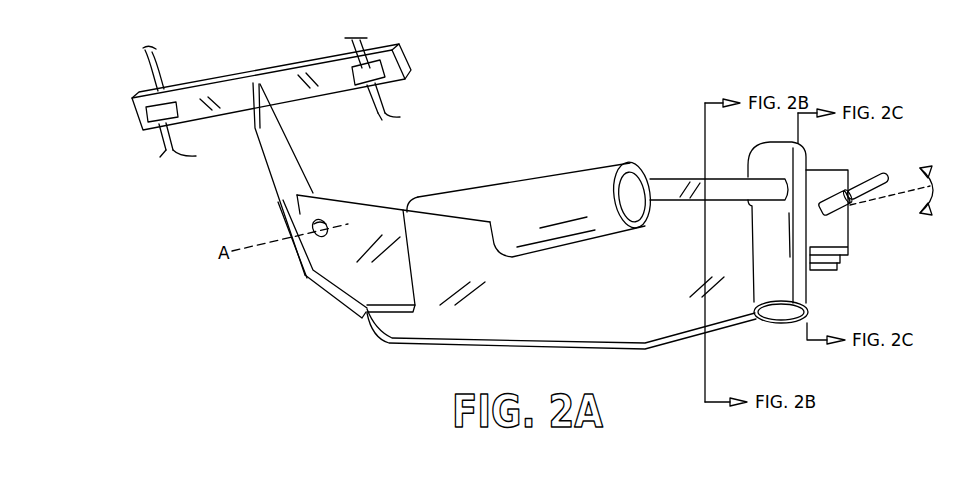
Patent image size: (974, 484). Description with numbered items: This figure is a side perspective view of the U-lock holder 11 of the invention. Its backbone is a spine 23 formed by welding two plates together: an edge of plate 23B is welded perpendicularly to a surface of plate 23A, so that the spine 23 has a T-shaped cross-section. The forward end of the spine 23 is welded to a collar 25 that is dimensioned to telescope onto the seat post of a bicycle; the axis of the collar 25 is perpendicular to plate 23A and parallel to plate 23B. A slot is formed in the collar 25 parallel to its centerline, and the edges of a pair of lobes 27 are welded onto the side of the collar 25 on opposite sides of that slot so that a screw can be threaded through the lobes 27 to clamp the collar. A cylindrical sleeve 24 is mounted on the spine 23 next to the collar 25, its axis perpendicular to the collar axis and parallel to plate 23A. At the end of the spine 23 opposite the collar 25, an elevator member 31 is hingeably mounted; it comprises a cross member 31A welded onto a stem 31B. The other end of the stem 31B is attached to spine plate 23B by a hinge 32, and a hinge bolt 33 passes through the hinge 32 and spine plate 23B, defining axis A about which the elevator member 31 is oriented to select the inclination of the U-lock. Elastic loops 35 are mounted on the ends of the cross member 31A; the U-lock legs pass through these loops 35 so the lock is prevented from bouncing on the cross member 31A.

The U-lock holder 11 is at (515, 117).
The spine 23 is at (673, 317).
The plate 23A is at (662, 178).
The plate 23B is at (664, 300).
The cylindrical sleeve 24 is at (568, 173).
The collar 25 is at (794, 158).
The lobes 27 is at (834, 239).
The elevator member 31 is at (252, 133).
The cross member 31A is at (277, 71).
The stem 31B is at (285, 150).
The hinge 32 is at (333, 253).
The hinge bolt 33 is at (323, 218).
The elastic loops 35 is at (168, 146).